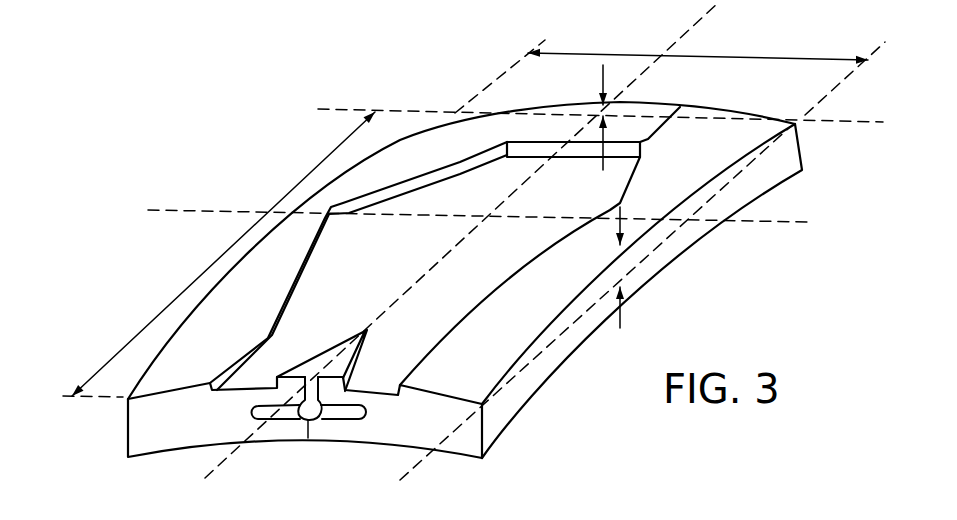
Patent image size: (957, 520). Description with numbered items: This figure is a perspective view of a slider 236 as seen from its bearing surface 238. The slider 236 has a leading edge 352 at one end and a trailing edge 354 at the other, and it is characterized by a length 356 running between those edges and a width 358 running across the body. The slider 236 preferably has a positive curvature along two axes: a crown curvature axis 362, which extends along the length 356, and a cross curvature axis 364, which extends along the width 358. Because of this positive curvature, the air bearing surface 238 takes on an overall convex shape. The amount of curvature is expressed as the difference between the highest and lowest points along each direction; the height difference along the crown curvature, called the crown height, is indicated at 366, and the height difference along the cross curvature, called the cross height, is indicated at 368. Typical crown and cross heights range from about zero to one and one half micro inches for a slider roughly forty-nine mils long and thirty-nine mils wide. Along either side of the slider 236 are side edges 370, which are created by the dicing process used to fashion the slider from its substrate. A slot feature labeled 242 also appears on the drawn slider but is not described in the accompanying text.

The slider 236 is at (410, 83).
The bearing surface 238 is at (276, 250).
The keyhole slot 242 is at (306, 438).
The leading edge 352 is at (730, 107).
The trailing edge 354 is at (393, 417).
The length 356 is at (193, 277).
The width 358 is at (703, 55).
The crown curvature axis 362 is at (678, 45).
The cross curvature axis 364 is at (763, 220).
The crown height 366 is at (623, 313).
The cross height 368 is at (600, 84).
The side edges 370 is at (505, 410).